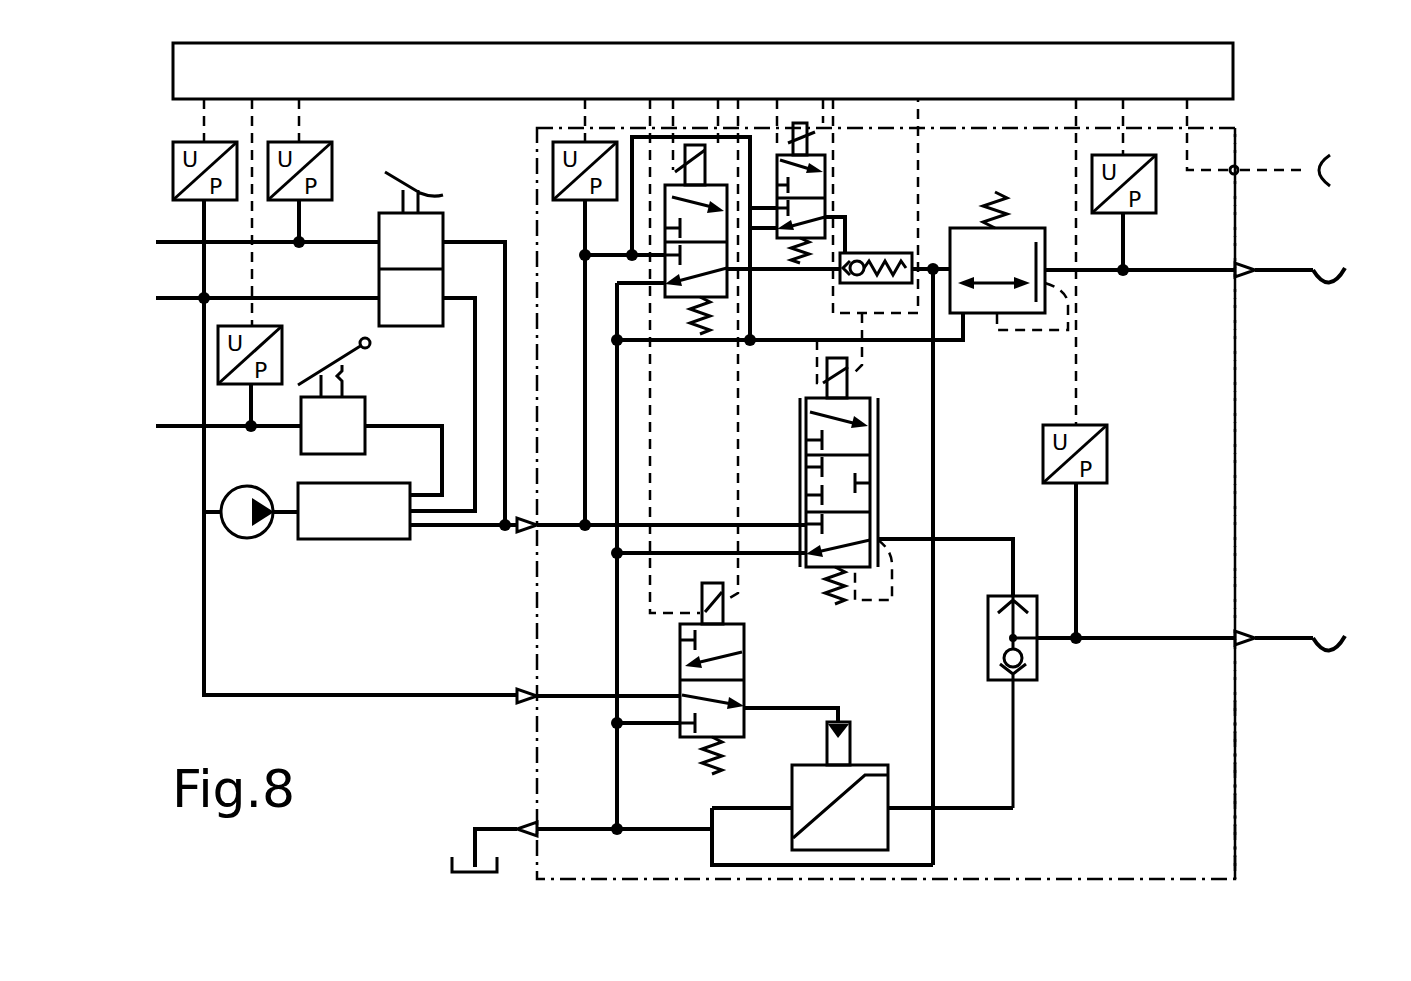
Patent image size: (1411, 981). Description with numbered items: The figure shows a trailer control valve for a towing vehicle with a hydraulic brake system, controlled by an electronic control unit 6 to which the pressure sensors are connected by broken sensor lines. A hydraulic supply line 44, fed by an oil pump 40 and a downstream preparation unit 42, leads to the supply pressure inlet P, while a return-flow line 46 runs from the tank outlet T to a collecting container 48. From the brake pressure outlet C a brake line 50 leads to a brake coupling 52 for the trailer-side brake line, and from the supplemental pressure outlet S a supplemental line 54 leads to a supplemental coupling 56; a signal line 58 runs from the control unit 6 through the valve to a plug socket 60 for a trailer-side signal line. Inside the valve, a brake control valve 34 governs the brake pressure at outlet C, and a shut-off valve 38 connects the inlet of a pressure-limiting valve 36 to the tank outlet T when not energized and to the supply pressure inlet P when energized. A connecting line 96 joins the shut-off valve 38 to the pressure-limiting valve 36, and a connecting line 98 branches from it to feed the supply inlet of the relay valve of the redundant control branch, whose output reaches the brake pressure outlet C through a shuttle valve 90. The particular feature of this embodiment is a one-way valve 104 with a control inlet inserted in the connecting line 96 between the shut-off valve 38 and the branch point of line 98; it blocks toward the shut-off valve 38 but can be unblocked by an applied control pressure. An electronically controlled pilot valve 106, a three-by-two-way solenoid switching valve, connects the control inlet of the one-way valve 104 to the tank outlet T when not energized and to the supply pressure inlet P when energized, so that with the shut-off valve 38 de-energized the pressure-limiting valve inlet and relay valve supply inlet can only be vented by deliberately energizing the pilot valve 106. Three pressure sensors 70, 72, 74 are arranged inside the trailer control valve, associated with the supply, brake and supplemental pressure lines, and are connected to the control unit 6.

The electronic control unit 6 is at (713, 85).
The brake control valve 34 is at (800, 460).
The pressure-limiting valve 36 is at (1030, 228).
The shut-off valve 38 is at (683, 297).
The oil pump 40 is at (221, 512).
The preparation unit 42 is at (371, 524).
The hydraulic supply line 44 is at (470, 528).
The return-flow line 46 is at (475, 838).
The collecting container 48 is at (462, 875).
The brake line 50 is at (1288, 638).
The brake coupling 52 is at (1330, 652).
The supplemental line 54 is at (1288, 270).
The supplemental coupling 56 is at (1328, 284).
The signal line 58 is at (1292, 170).
The plug socket 60 is at (1330, 186).
The pressure sensor 70 is at (580, 200).
The pressure sensor 72 is at (1108, 455).
The pressure sensor 74 is at (1155, 185).
The shuttle valve 90 is at (1037, 668).
The connecting line 96 is at (783, 270).
The connecting line 98 is at (933, 418).
The one-way valve 104 is at (882, 253).
The pilot valve 106 is at (827, 188).